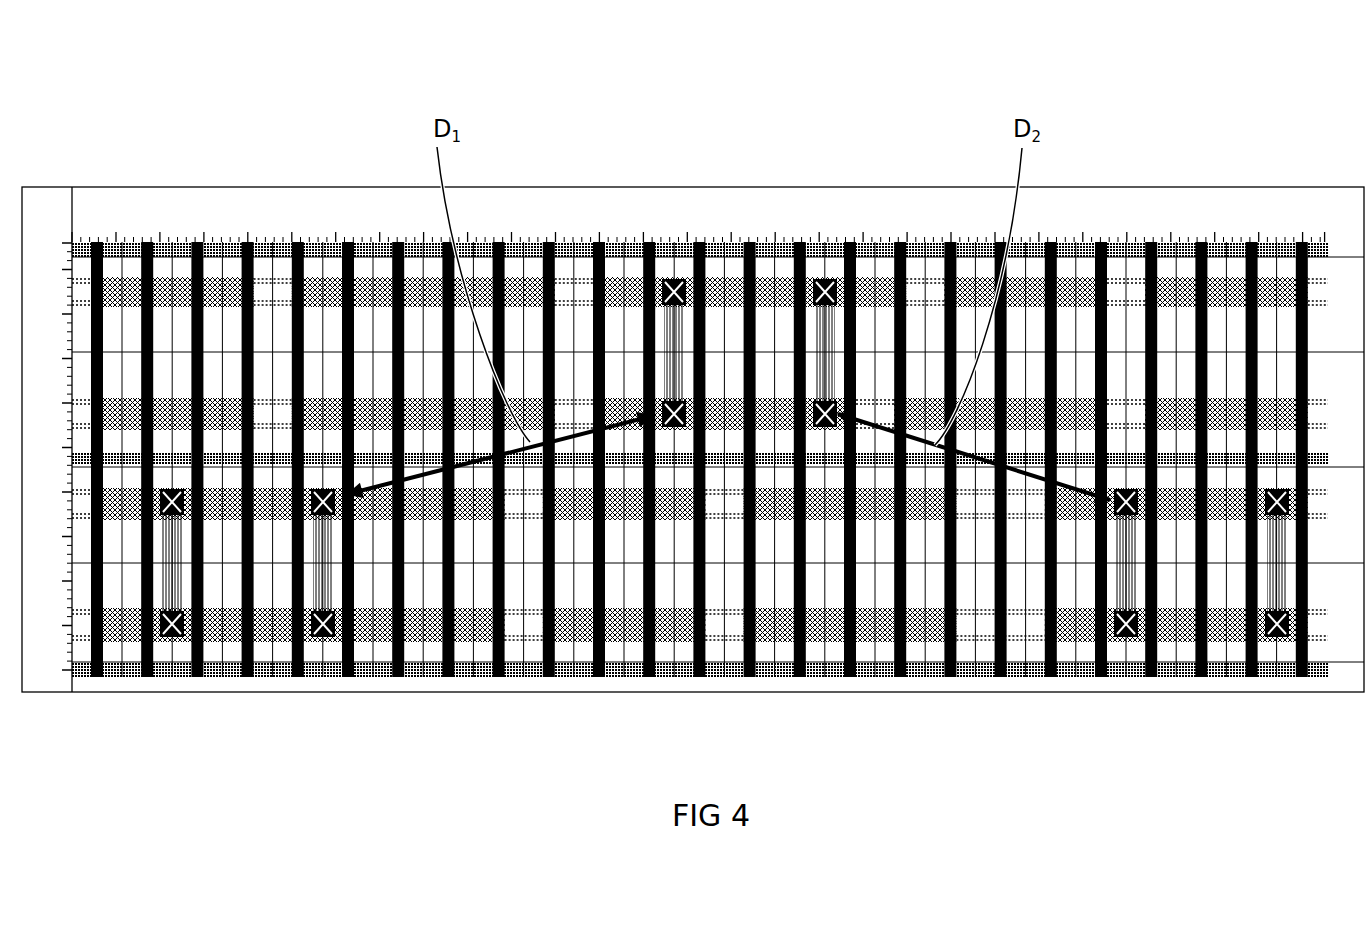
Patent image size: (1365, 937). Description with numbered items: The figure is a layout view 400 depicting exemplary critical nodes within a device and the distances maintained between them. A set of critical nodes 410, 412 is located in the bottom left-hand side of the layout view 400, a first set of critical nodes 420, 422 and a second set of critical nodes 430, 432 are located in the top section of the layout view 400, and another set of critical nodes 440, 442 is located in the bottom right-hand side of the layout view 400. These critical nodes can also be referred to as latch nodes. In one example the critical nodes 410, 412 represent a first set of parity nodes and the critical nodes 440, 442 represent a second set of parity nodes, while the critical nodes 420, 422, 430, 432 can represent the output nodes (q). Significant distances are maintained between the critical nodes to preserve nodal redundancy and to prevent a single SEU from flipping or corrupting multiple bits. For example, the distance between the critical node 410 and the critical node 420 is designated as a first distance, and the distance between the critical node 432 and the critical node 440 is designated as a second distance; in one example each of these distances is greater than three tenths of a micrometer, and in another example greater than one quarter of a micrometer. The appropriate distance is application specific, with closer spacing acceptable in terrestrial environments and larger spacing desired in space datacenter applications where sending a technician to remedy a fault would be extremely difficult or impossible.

The layout view 400 is at (826, 92).
The critical node 410 is at (335, 503).
The critical node 412 is at (336, 628).
The critical node 420 is at (662, 288).
The critical node 422 is at (687, 428).
The critical node 430 is at (838, 288).
The critical node 432 is at (812, 420).
The critical node 440 is at (1108, 508).
The critical node 442 is at (1112, 632).